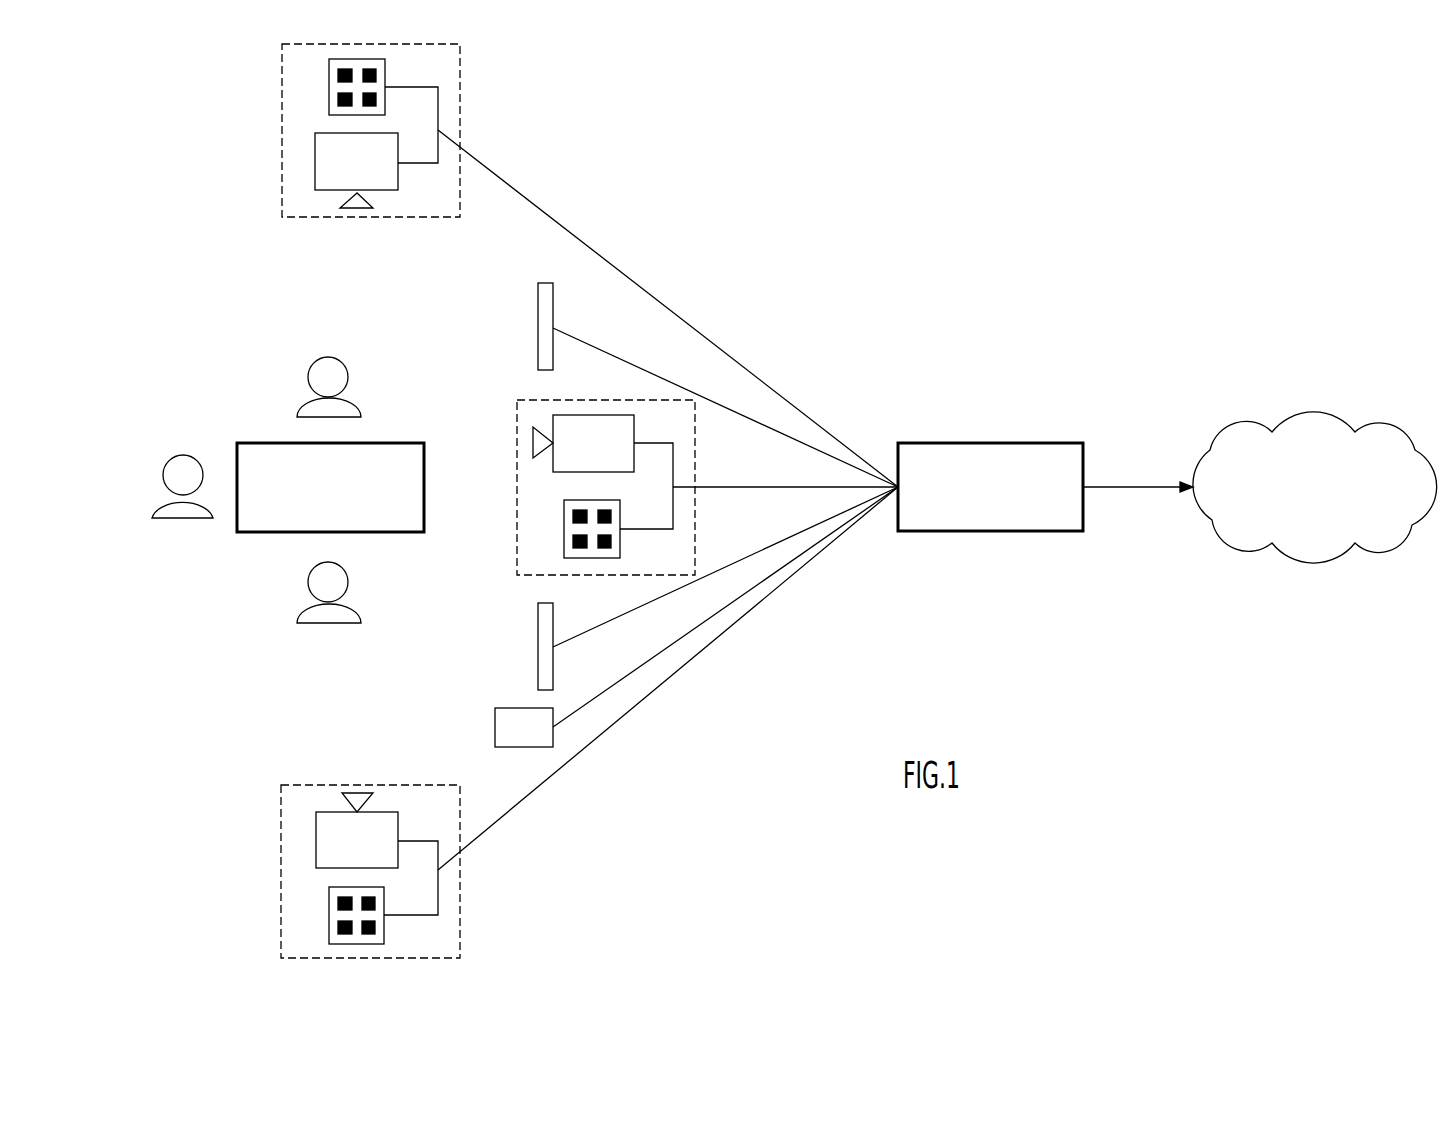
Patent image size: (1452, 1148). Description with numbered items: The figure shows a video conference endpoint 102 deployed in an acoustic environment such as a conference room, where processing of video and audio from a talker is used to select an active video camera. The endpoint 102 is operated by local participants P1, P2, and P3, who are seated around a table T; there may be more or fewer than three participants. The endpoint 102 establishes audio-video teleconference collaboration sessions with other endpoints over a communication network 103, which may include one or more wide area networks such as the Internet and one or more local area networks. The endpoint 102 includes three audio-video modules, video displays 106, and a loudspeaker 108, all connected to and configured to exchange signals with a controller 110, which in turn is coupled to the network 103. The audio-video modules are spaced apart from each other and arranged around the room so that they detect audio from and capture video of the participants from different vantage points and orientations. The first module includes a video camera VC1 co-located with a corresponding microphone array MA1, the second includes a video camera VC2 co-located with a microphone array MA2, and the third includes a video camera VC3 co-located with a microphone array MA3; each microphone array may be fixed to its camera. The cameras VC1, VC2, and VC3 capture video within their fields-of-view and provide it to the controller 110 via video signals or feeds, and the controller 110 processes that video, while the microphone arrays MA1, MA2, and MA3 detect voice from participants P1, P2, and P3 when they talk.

The video conference endpoint 102 is at (853, 388).
The communication network 103 is at (1343, 417).
The video display 106 is at (538, 356).
The loudspeaker 108 is at (495, 733).
The controller 110 is at (1040, 443).
The video camera VC1 is at (357, 830).
The video camera VC2 is at (583, 443).
The video camera VC3 is at (356, 170).
The microphone array MA1 is at (384, 924).
The microphone array MA2 is at (620, 540).
The microphone array MA3 is at (386, 80).
The participant P1 is at (309, 588).
The participant P2 is at (164, 485).
The participant P3 is at (309, 383).
The table T is at (357, 500).